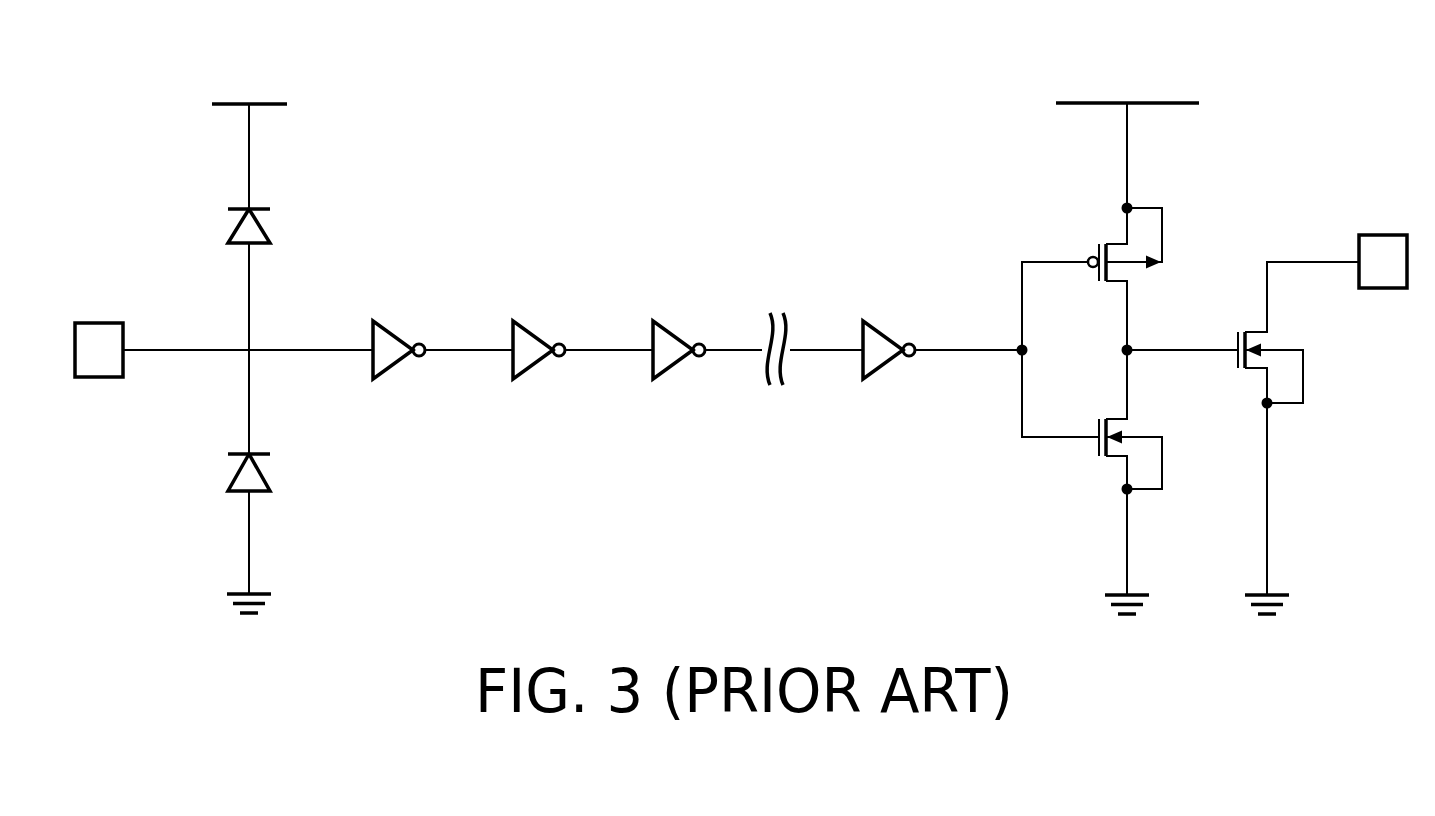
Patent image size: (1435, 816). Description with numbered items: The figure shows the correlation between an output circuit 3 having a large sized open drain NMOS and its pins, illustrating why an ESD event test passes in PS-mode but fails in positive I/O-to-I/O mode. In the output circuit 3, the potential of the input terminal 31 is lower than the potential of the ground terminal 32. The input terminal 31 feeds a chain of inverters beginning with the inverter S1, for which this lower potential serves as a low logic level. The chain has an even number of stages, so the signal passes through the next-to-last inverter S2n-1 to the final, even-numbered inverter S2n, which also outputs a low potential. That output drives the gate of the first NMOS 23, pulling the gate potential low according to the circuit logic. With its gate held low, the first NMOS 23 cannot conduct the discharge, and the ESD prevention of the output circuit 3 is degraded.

The output circuit 3 is at (84, 68).
The input terminal 31 is at (100, 323).
The ground terminal 32 is at (245, 614).
The inverter S1 is at (395, 336).
The (2n-1)th inverter S2n-1 is at (885, 336).
The (2n)th inverter S2n is at (1131, 345).
The first NMOS 23 is at (1113, 459).